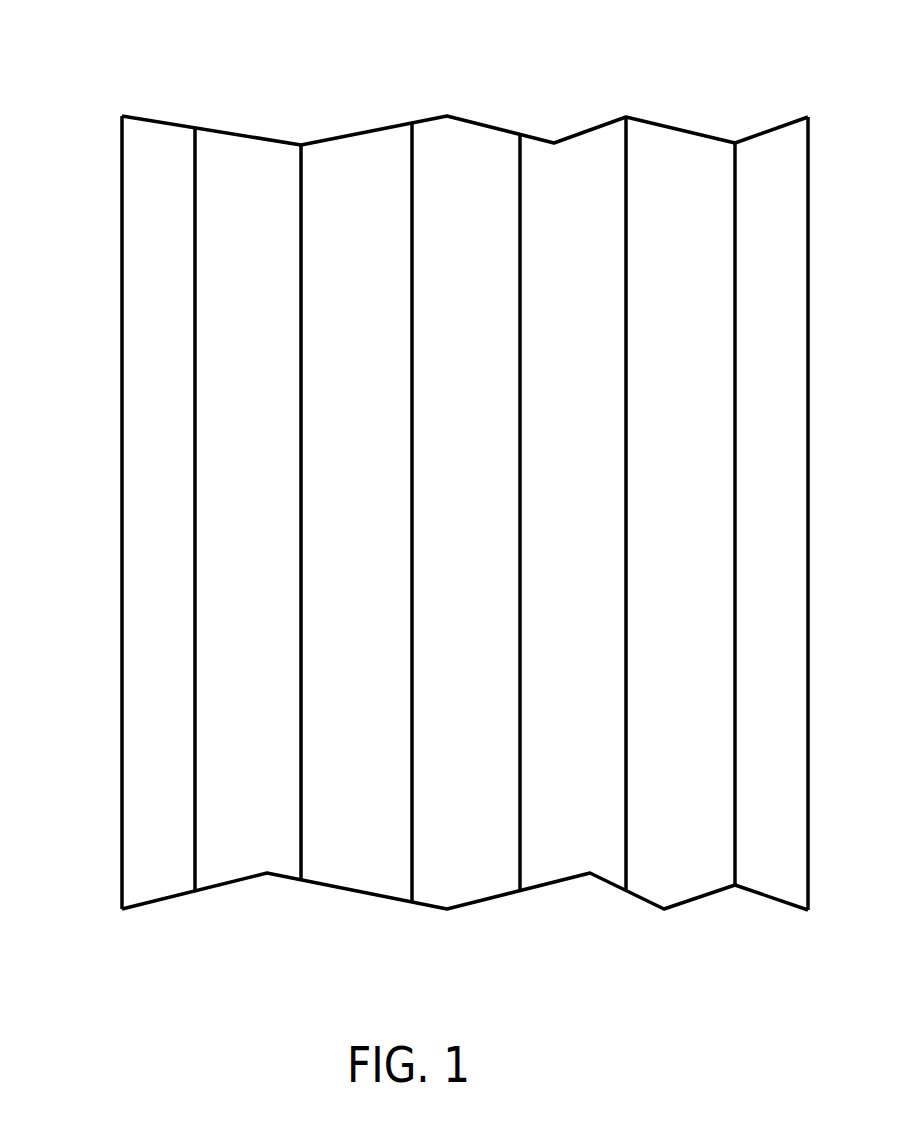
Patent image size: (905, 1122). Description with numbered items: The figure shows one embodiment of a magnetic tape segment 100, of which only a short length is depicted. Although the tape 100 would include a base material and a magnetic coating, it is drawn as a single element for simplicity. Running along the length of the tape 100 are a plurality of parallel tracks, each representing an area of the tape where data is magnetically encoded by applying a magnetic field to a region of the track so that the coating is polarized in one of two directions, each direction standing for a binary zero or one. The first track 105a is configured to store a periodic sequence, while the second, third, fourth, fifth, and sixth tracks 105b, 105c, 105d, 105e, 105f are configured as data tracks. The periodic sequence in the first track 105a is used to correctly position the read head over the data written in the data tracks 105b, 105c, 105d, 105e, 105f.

The magnetic tape segment 100 is at (88, 58).
The first track 105a is at (195, 237).
The second track 105b is at (301, 230).
The third track 105c is at (412, 257).
The fourth track 105d is at (520, 224).
The fifth track 105e is at (626, 260).
The sixth track 105f is at (735, 224).